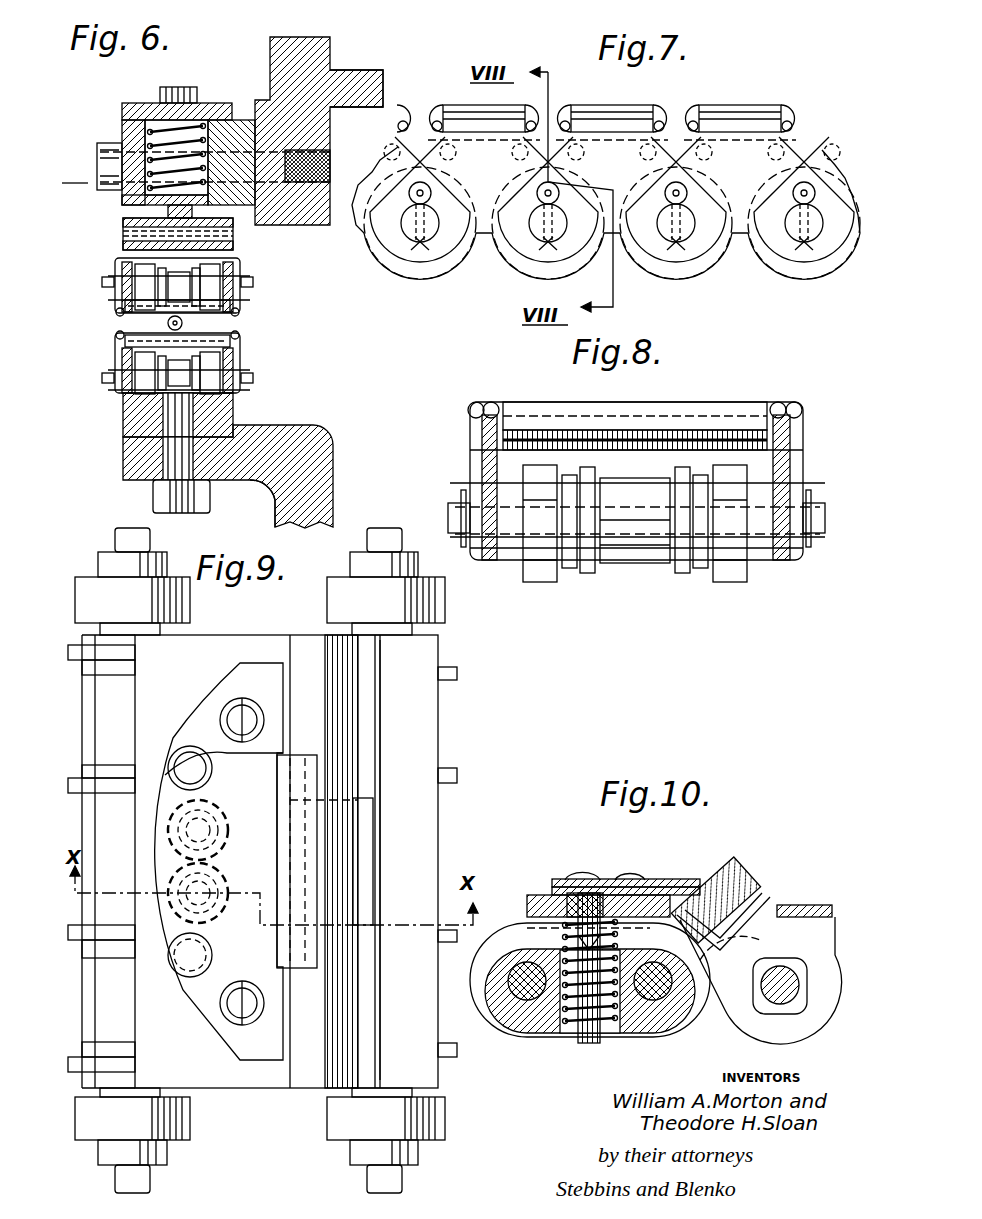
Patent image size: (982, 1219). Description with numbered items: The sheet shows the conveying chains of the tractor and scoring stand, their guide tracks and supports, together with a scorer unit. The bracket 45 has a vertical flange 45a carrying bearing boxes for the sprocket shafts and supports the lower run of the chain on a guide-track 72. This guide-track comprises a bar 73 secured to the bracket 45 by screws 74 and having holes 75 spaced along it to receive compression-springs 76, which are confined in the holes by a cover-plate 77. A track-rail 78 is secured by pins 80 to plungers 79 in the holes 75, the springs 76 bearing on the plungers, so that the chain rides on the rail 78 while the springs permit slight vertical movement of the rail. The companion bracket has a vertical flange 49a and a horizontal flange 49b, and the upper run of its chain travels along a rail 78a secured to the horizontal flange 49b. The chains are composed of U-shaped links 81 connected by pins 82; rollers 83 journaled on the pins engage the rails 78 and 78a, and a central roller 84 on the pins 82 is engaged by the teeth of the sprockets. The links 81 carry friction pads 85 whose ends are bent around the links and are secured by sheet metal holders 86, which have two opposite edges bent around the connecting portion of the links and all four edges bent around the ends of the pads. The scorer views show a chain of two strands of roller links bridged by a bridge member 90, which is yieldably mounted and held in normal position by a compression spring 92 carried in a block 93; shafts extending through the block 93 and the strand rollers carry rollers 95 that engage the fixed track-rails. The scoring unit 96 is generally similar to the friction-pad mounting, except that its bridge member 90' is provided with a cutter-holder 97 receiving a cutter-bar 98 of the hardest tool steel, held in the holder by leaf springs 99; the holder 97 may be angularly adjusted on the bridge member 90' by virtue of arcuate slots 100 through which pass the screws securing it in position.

In FIG. 6, the bracket 45 is at (312, 130).
In FIG. 6, the vertical flange 45a is at (318, 48).
In FIG. 6, the vertical flange 49a is at (325, 495).
In FIG. 6, the horizontal flange 49b is at (128, 455).
In FIG. 6, the guide-track 72 is at (75, 173).
In FIG. 6, the bar 73 is at (238, 125).
In FIG. 6, the screws 74 is at (98, 150).
In FIG. 6, the holes 75 is at (125, 135).
In FIG. 6, the compression-springs 76 is at (138, 118).
In FIG. 6, the cover-plate 77 is at (218, 107).
In FIG. 6, the track-rail 78 is at (122, 248).
In FIG. 6, the rail 78a is at (233, 408).
In FIG. 6, the plungers 79 is at (128, 200).
In FIG. 6, the pins 80 is at (122, 229).
In FIG. 6, the links 81 is at (234, 290).
In FIG. 7, the links 81 is at (638, 240).
In FIG. 8, the links 81 is at (790, 470).
In FIG. 6, the pins 82 is at (254, 280).
In FIG. 7, the pins 82 is at (437, 235).
In FIG. 8, the pins 82 is at (448, 512).
In FIG. 6, the rollers 83 is at (220, 266).
In FIG. 7, the rollers 83 is at (762, 258).
In FIG. 8, the rollers 83 is at (540, 580).
In FIG. 6, the central roller 84 is at (170, 294).
In FIG. 8, the central roller 84 is at (640, 565).
In FIG. 7, the friction pads 85 is at (785, 120).
In FIG. 8, the friction pads 85 is at (494, 404).
In FIG. 6, the sheet metal holders 86 is at (232, 336).
In FIG. 7, the sheet metal holders 86 is at (724, 110).
In FIG. 8, the sheet metal holders 86 is at (700, 412).
In FIG. 9, the bridge member 90 is at (253, 848).
In FIG. 10, the bridge member 90 is at (596, 887).
In FIG. 9, the bridge member 90' is at (434, 860).
In FIG. 10, the bridge member 90' is at (804, 886).
In FIG. 10, the compression spring 92 is at (582, 1036).
In FIG. 10, the block 93 is at (632, 1036).
In FIG. 9, the rollers 95 is at (436, 604).
In FIG. 10, the rollers 95 is at (520, 1032).
In FIG. 9, the scoring unit 96 is at (440, 722).
In FIG. 10, the scoring unit 96 is at (660, 886).
In FIG. 9, the cutter-holder 97 is at (368, 776).
In FIG. 10, the cutter-holder 97 is at (748, 893).
In FIG. 9, the cutter-bar 98 is at (338, 726).
In FIG. 10, the cutter-bar 98 is at (714, 880).
In FIG. 9, the leaf springs 99 is at (268, 782).
In FIG. 10, the leaf springs 99 is at (646, 882).
In FIG. 9, the arcuate slots 100 is at (248, 702).